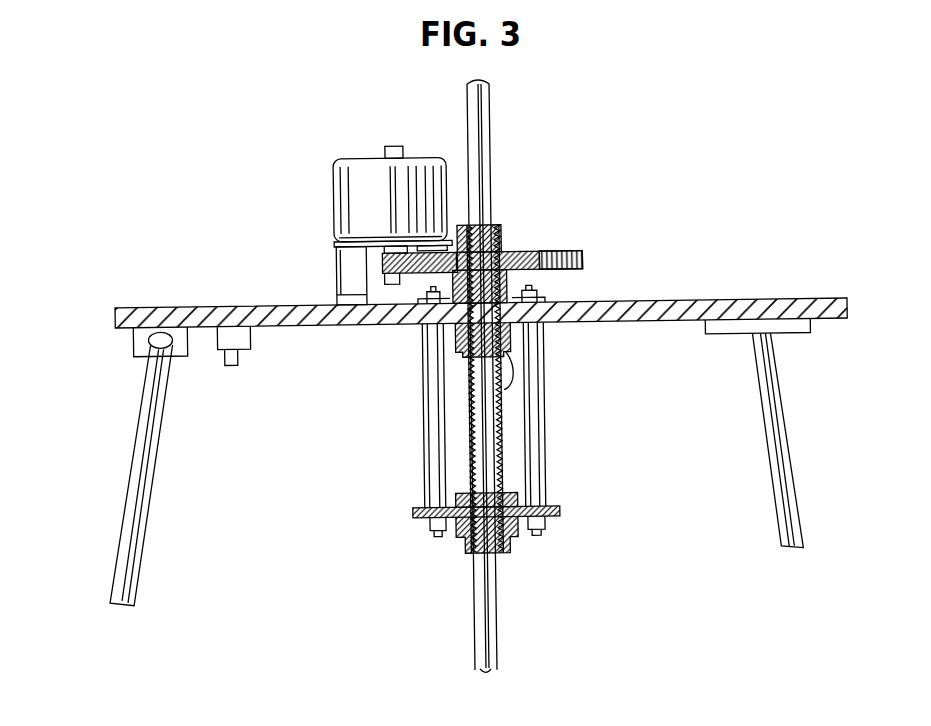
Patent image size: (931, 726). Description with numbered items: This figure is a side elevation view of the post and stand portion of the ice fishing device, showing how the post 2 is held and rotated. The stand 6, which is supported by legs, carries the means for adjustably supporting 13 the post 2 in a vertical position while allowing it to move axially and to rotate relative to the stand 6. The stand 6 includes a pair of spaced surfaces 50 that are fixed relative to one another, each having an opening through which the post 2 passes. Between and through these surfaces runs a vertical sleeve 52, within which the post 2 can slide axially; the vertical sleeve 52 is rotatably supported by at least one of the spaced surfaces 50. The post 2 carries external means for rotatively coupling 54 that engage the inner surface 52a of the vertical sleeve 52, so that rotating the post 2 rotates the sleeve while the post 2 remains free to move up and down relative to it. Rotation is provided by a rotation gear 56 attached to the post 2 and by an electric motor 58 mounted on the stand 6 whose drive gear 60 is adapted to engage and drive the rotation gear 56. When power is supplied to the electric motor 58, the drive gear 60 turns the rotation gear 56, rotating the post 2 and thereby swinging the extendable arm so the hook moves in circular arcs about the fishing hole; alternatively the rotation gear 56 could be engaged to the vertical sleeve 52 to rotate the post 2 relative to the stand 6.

The post 2 is at (492, 158).
The stand 6 is at (104, 305).
The means for adjustably supporting 13 is at (525, 388).
The spaced surfaces 50 is at (557, 511).
The vertical sleeve 52 is at (505, 352).
The inner surface 52a is at (507, 387).
The external means for rotatively coupling 54 is at (500, 600).
The rotation gear 56 is at (583, 260).
The electric motor 58 is at (335, 190).
The drive gear 60 is at (392, 279).